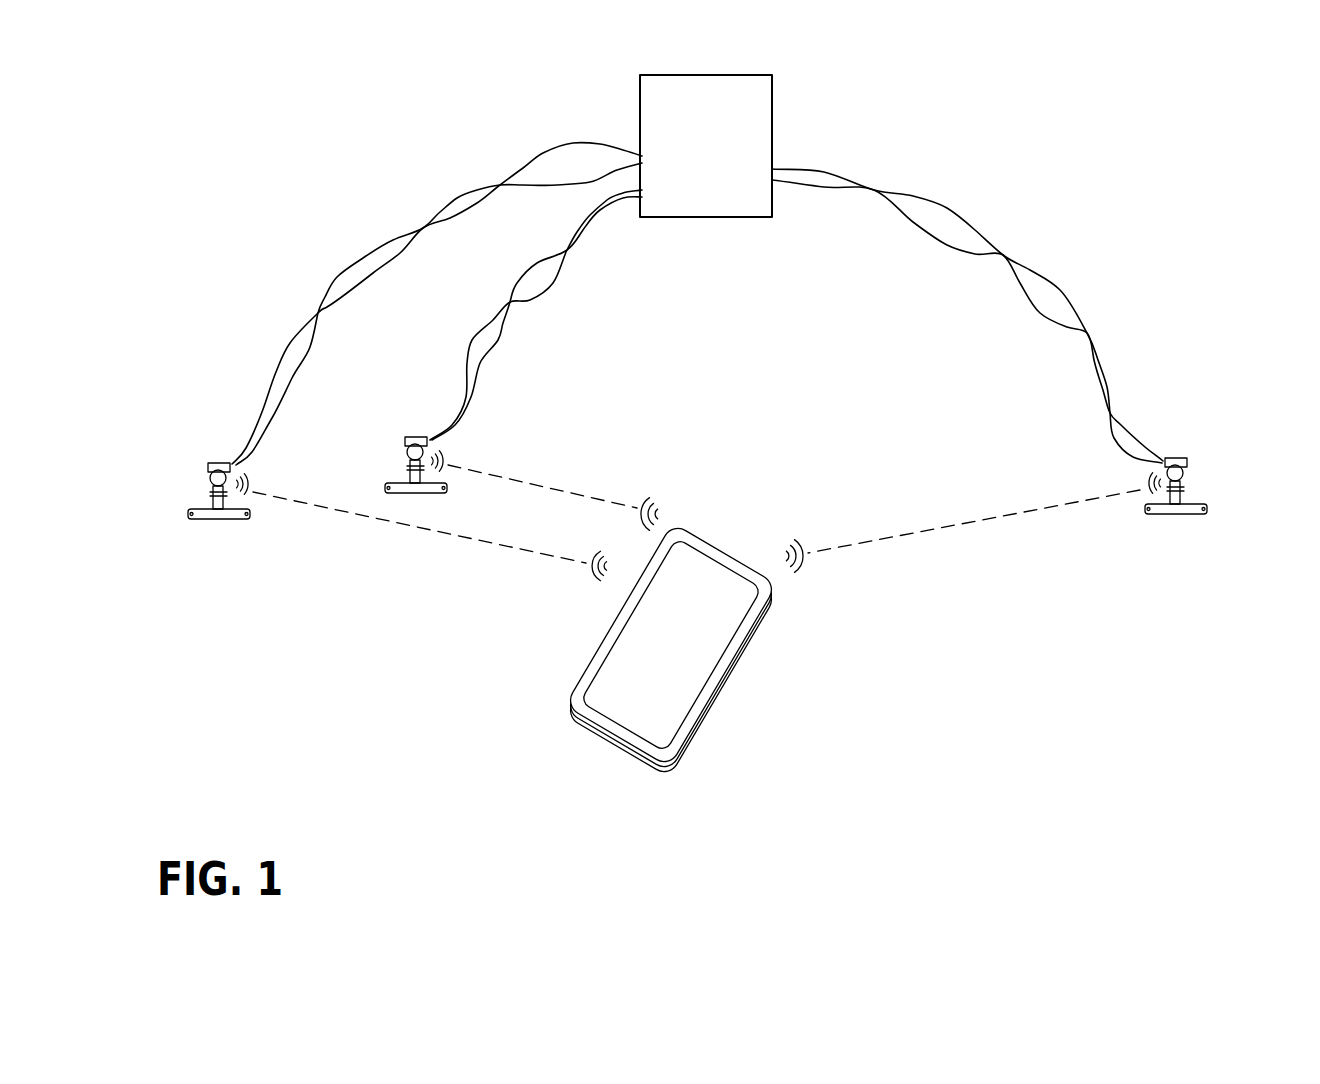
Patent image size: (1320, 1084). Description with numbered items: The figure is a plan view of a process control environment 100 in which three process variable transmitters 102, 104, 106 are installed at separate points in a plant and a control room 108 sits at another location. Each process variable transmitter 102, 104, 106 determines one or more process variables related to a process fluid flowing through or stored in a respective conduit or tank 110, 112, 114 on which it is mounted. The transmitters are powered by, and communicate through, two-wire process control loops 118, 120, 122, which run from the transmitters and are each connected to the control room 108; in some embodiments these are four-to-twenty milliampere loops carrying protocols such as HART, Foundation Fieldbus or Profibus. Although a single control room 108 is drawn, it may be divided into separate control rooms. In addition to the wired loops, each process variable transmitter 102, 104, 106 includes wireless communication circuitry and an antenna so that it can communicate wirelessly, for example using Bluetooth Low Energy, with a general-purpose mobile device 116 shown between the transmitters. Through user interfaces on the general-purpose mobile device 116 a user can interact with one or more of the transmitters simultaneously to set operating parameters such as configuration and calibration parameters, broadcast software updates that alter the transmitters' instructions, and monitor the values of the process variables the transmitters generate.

The process control environment 100 is at (1050, 694).
The process variable transmitter 102 is at (213, 492).
The process variable transmitter 104 is at (411, 464).
The process variable transmitter 106 is at (1196, 486).
The control room 108 is at (725, 185).
The conduit or tank 110 is at (216, 520).
The conduit or tank 112 is at (413, 492).
The conduit or tank 114 is at (1194, 515).
The general-purpose mobile device 116 is at (650, 760).
The two-wire process control loop 118 is at (316, 318).
The two-wire process control loop 120 is at (487, 378).
The two-wire process control loop 122 is at (1100, 343).